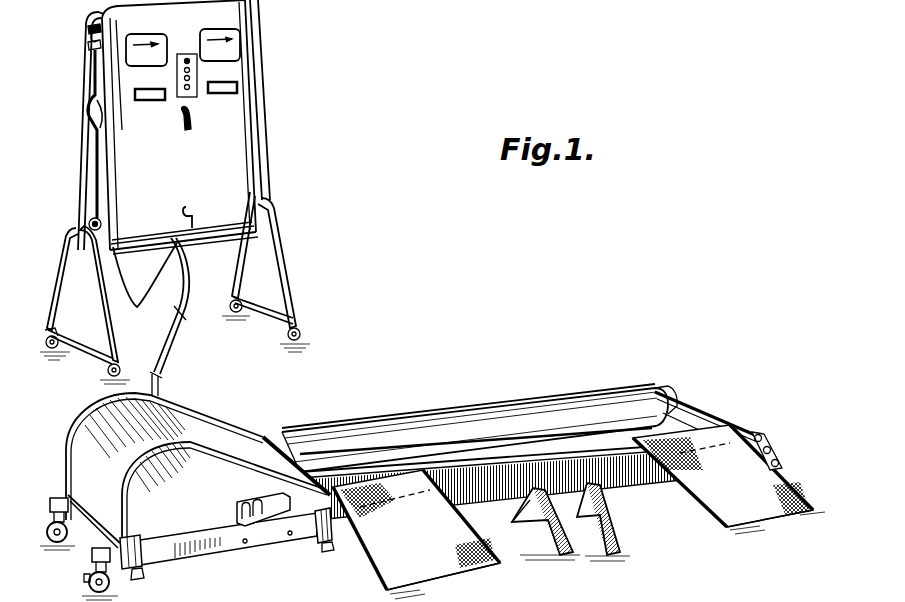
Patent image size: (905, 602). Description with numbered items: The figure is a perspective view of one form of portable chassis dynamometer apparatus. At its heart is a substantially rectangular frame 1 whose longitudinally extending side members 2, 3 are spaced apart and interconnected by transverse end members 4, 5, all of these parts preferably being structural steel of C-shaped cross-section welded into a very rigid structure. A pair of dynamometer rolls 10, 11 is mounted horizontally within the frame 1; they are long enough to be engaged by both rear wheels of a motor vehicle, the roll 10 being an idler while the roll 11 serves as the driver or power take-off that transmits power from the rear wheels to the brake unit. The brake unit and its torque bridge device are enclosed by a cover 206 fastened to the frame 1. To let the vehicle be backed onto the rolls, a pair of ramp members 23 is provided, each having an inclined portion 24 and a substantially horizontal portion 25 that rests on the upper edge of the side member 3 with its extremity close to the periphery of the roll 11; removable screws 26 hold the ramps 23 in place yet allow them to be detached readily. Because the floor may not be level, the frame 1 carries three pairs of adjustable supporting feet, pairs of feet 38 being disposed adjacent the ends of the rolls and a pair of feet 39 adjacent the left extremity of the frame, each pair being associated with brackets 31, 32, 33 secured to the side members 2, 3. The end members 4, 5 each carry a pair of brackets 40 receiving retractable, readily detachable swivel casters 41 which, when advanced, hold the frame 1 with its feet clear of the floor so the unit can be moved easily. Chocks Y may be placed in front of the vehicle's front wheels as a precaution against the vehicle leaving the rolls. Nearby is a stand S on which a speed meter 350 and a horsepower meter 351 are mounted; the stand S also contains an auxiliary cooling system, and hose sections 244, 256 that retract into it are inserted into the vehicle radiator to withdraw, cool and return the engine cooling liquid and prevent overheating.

The stand S is at (262, 50).
The speed meter 350 is at (143, 34).
The horsepower meter 351 is at (215, 29).
The hose section 256 is at (88, 34).
The hose section 244 is at (90, 46).
The cover 206 is at (230, 436).
The side member 3 is at (212, 552).
The bracket 31 is at (140, 543).
The bracket 32 is at (317, 552).
The adjustable supporting foot 39 is at (145, 578).
The adjustable supporting foot 38 is at (328, 553).
The transverse end member 4 is at (84, 530).
The bracket 40 is at (66, 496).
The caster 41 is at (85, 578).
The portable chassis dynamometer frame 1 is at (578, 397).
The dynamometer roll 10 is at (538, 420).
The dynamometer roll 11 is at (620, 427).
The side member 2 is at (472, 415).
The transverse end member 5 is at (693, 405).
The horizontal portion 25 is at (372, 478).
The inclined portion 24 is at (395, 567).
The ramp member 23 is at (467, 567).
The removable screw 26 is at (427, 488).
The bracket 33 is at (775, 442).
The chock Y is at (540, 547).